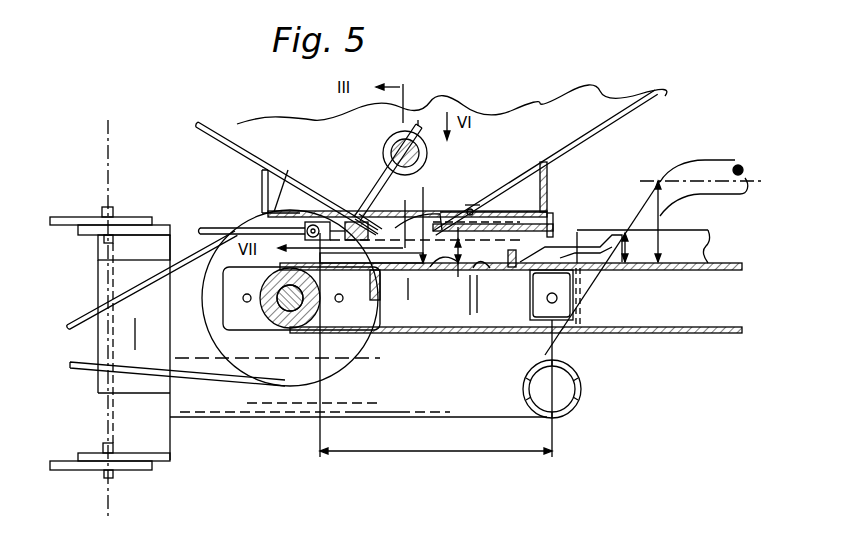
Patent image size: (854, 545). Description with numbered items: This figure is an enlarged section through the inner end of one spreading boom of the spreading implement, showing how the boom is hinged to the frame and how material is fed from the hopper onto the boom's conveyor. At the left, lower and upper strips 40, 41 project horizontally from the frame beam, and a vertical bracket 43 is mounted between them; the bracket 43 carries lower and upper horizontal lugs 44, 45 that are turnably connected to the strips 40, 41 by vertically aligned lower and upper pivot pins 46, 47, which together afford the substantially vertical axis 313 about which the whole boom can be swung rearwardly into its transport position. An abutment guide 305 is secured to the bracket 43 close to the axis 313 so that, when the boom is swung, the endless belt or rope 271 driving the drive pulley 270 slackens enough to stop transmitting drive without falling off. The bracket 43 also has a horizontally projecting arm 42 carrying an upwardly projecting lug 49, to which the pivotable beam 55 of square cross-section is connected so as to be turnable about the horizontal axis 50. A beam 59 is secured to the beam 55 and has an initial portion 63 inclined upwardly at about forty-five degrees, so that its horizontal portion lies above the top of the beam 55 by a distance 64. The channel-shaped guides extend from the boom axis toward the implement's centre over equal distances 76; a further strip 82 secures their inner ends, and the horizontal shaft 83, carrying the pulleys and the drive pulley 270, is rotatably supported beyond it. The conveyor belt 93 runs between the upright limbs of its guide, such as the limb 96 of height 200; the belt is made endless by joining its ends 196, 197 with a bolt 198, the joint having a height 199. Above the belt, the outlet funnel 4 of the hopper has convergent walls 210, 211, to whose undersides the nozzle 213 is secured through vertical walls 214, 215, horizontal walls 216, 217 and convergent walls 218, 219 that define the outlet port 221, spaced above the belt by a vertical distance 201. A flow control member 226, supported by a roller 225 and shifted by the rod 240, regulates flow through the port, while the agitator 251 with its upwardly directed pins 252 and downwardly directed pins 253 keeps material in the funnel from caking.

The outlet funnel 4 is at (237, 123).
The vertical axis 313 is at (110, 140).
The upper strip 41 is at (62, 216).
The upper horizontal lug 45 is at (152, 225).
The upper pivot pin 47 is at (108, 207).
The vertical bracket 43 is at (124, 250).
The abutment guide 305 is at (98, 288).
The lower horizontal lug 44 is at (140, 451).
The lower pivot pin 46 is at (104, 444).
The lower strip 40 is at (78, 470).
The drive pulley 270 is at (218, 342).
The endless belt or rope 271 is at (86, 372).
The horizontally projecting arm 42 is at (226, 420).
The horizontal shaft 83 is at (292, 322).
The further strip 82 is at (372, 290).
The conveyor belt 93 is at (680, 334).
The upwardly projecting lug 49 is at (562, 341).
The pivotable beam 55 is at (547, 318).
The equal distance 76 is at (436, 345).
The horizontal axis 50 is at (557, 298).
The belt end 196 is at (607, 242).
The guide limb 96 is at (582, 232).
The limb height 200 is at (630, 265).
The initial inclined portion 63 is at (638, 198).
The beam 59 is at (734, 165).
The distance 64 is at (666, 211).
The funnel wall 210 is at (276, 168).
The horizontal nozzle wall 216 is at (290, 168).
The nozzle 213 is at (256, 177).
The vertical nozzle wall 214 is at (262, 193).
The rod 240 is at (213, 228).
The agitator 251 is at (384, 154).
The downwardly directed pin 253 is at (393, 173).
The upwardly directed pin 252 is at (418, 126).
The downwardly convergent nozzle wall 218 is at (398, 222).
The outlet port 221 is at (438, 215).
The roller 225 is at (360, 208).
The downwardly convergent nozzle wall 219 is at (470, 212).
The funnel wall 211 is at (545, 160).
The horizontal nozzle wall 217 is at (503, 209).
The vertical nozzle wall 215 is at (551, 186).
The flow control member 226 is at (583, 196).
The vertical distance 201 is at (436, 265).
The joint height 199 is at (460, 278).
The belt end 197 is at (514, 262).
The bolt 198 is at (520, 272).